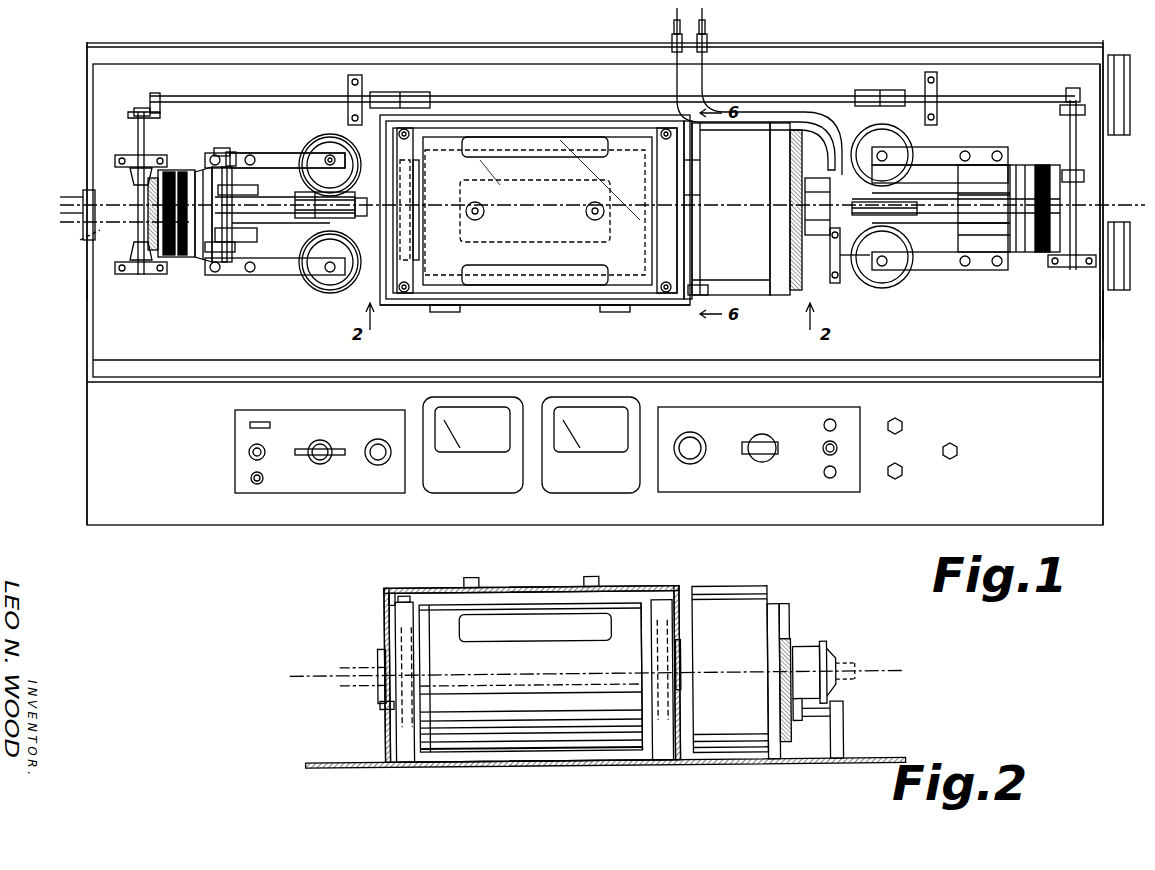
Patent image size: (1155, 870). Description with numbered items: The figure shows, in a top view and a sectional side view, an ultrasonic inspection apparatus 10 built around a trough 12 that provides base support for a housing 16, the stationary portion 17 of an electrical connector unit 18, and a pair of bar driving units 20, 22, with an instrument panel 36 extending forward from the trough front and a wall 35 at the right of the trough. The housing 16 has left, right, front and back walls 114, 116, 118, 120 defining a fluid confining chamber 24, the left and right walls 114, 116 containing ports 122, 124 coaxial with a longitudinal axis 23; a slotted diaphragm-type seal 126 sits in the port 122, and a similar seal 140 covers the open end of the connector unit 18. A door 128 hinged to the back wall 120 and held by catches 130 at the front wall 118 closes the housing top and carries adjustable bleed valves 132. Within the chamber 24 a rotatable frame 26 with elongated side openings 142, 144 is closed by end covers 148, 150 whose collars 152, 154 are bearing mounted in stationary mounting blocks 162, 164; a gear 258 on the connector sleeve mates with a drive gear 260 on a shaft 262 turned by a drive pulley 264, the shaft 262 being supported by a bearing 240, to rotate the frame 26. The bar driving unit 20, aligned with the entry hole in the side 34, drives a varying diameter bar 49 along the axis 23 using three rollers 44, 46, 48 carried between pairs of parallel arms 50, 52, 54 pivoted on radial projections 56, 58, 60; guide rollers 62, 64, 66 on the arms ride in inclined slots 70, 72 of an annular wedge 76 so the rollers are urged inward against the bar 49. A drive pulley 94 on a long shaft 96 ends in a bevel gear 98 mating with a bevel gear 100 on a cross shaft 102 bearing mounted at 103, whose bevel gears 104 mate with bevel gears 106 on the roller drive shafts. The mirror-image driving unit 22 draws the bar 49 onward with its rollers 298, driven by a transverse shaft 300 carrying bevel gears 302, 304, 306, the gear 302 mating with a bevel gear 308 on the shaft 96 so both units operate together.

In FIG. 1, the ultrasonic inspection apparatus 10 is at (80, 100).
In FIG. 1, the trough 12 is at (87, 283).
In FIG. 2, the trough 12 is at (862, 758).
In FIG. 1, the housing 16 is at (470, 113).
In FIG. 2, the housing 16 is at (384, 618).
In FIG. 1, the stationary portion 17 is at (782, 128).
In FIG. 2, the stationary portion 17 is at (778, 605).
In FIG. 1, the electrical connector unit 18 is at (745, 125).
In FIG. 2, the electrical connector unit 18 is at (735, 587).
In FIG. 1, the bar driving unit 20 is at (263, 148).
In FIG. 1, the bar driving unit 22 is at (957, 148).
In FIG. 1, the longitudinal axis 23 is at (44, 212).
In FIG. 2, the longitudinal axis 23 is at (870, 673).
In FIG. 1, the fluid confining chamber 24 is at (458, 123).
In FIG. 2, the fluid confining chamber 24 is at (428, 588).
In FIG. 1, the rotatable frame 26 is at (460, 250).
In FIG. 2, the rotatable frame 26 is at (558, 600).
In FIG. 1, the side 34 is at (88, 128).
In FIG. 1, the right wall 35 is at (1102, 328).
In FIG. 1, the instrument panel 36 is at (233, 495).
In FIG. 1, the roller 44 is at (328, 292).
In FIG. 1, the roller 46 is at (362, 217).
In FIG. 1, the roller 48 is at (308, 140).
In FIG. 1, the bar 49 is at (62, 236).
In FIG. 2, the bar 49 is at (344, 688).
In FIG. 1, the pair of parallel arms 50 is at (284, 276).
In FIG. 1, the pair of parallel arms 52 is at (308, 196).
In FIG. 1, the pair of parallel arms 54 is at (272, 175).
In FIG. 1, the radial projection 56 is at (250, 242).
In FIG. 1, the radial projection 58 is at (292, 205).
In FIG. 1, the radial projection 60 is at (244, 158).
In FIG. 1, the guide roller 62 is at (224, 252).
In FIG. 1, the guide roller 64 is at (226, 200).
In FIG. 1, the guide roller 66 is at (220, 148).
In FIG. 1, the slot 70 is at (213, 214).
In FIG. 1, the slot 72 is at (205, 170).
In FIG. 1, the annular wedge 76 is at (178, 258).
In FIG. 1, the drive pulley 94 is at (1130, 42).
In FIG. 1, the long shaft 96 is at (945, 97).
In FIG. 1, the bevel gear 98 is at (154, 93).
In FIG. 1, the bevel gear 100 is at (140, 97).
In FIG. 1, the cross shaft 102 is at (138, 126).
In FIG. 1, the bearing mounting 103 is at (115, 160).
In FIG. 1, the bevel gears 104 is at (130, 175).
In FIG. 1, the bevel gears 106 is at (158, 178).
In FIG. 1, the left wall 114 is at (383, 296).
In FIG. 2, the left wall 114 is at (385, 636).
In FIG. 1, the right wall 116 is at (696, 124).
In FIG. 2, the right wall 116 is at (684, 600).
In FIG. 1, the front wall 118 is at (665, 306).
In FIG. 2, the front wall 118 is at (512, 592).
In FIG. 1, the back wall 120 is at (575, 101).
In FIG. 1, the port 122 is at (352, 150).
In FIG. 2, the port 122 is at (378, 655).
In FIG. 1, the port 124 is at (700, 290).
In FIG. 2, the port 124 is at (380, 704).
In FIG. 1, the slotted diaphragm-type seal 126 is at (393, 198).
In FIG. 2, the slotted diaphragm-type seal 126 is at (688, 694).
In FIG. 1, the door 128 is at (503, 130).
In FIG. 2, the door 128 is at (650, 586).
In FIG. 1, the catches 130 is at (450, 313).
In FIG. 1, the adjustable bleed valves 132 is at (486, 211).
In FIG. 2, the adjustable bleed valves 132 is at (480, 576).
In FIG. 1, the slotted diaphragm-type seal 140 is at (861, 212).
In FIG. 2, the slotted diaphragm-type seal 140 is at (830, 658).
In FIG. 1, the side opening 142 is at (583, 266).
In FIG. 2, the side opening 142 is at (544, 640).
In FIG. 1, the side opening 144 is at (605, 140).
In FIG. 1, the end cover 148 is at (420, 172).
In FIG. 1, the end cover 150 is at (700, 160).
In FIG. 1, the collar 152 is at (424, 222).
In FIG. 2, the collar 152 is at (427, 667).
In FIG. 1, the collar 154 is at (700, 195).
In FIG. 2, the collar 154 is at (655, 660).
In FIG. 1, the stationary mounting block 162 is at (412, 148).
In FIG. 2, the stationary mounting block 162 is at (406, 761).
In FIG. 1, the stationary mounting block 164 is at (660, 140).
In FIG. 2, the stationary mounting block 164 is at (664, 756).
In FIG. 2, the bearing 240 is at (792, 736).
In FIG. 1, the gear 258 is at (800, 150).
In FIG. 2, the gear 258 is at (797, 630).
In FIG. 1, the drive gear 260 is at (835, 283).
In FIG. 1, the shaft 262 is at (854, 282).
In FIG. 2, the shaft 262 is at (846, 715).
In FIG. 1, the drive pulley 264 is at (1100, 295).
In FIG. 1, the rollers 298 is at (895, 150).
In FIG. 1, the transverse shaft 300 is at (1068, 128).
In FIG. 1, the bevel gear 302 is at (1060, 110).
In FIG. 1, the bevel gear 304 is at (1068, 168).
In FIG. 1, the bevel gear 306 is at (1070, 268).
In FIG. 1, the bevel gear 308 is at (1072, 88).